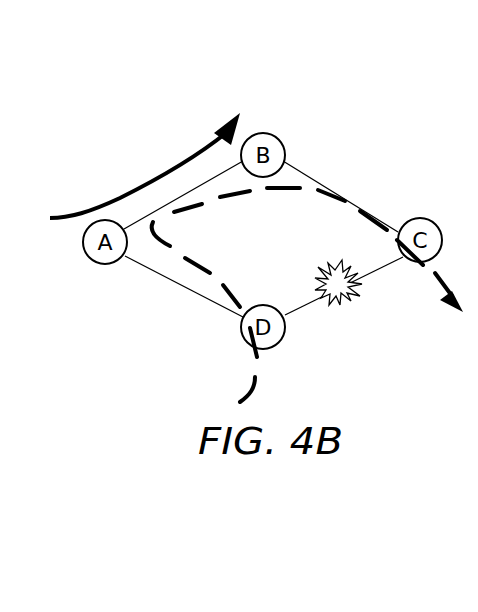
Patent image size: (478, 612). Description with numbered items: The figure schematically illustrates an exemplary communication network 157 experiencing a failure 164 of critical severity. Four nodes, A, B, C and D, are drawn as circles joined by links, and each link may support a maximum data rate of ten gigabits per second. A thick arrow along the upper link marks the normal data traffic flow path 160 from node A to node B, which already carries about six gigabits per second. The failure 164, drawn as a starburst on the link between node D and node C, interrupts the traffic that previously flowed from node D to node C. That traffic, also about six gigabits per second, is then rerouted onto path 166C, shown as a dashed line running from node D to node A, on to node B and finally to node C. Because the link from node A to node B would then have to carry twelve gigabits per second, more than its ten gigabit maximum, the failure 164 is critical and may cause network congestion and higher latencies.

The communication network 157 is at (148, 90).
The data traffic flow path 160 is at (153, 182).
The rerouted data traffic path 166C is at (243, 198).
The failure 164 is at (343, 305).